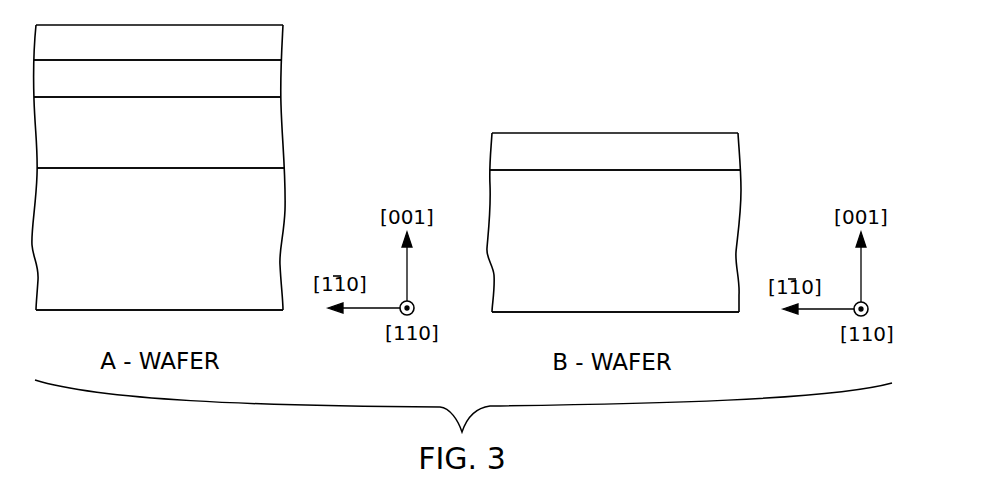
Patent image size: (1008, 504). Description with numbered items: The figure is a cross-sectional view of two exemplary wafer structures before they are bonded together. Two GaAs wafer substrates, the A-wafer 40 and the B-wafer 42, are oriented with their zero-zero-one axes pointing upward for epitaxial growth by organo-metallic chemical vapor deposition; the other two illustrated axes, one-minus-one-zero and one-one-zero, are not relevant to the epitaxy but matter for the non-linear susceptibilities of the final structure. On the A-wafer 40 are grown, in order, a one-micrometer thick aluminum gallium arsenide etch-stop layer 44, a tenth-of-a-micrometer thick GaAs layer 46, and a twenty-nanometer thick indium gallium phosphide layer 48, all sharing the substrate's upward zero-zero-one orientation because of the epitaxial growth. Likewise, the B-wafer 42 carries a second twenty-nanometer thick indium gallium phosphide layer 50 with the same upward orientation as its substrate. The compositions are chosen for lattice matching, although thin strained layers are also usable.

The InGaP layer 48 is at (274, 40).
The GaAs layer 46 is at (274, 76).
The etch-stop layer 44 is at (274, 127).
The A-wafer 40 is at (276, 197).
The second InGaP layer 50 is at (728, 149).
The B-wafer 42 is at (728, 199).